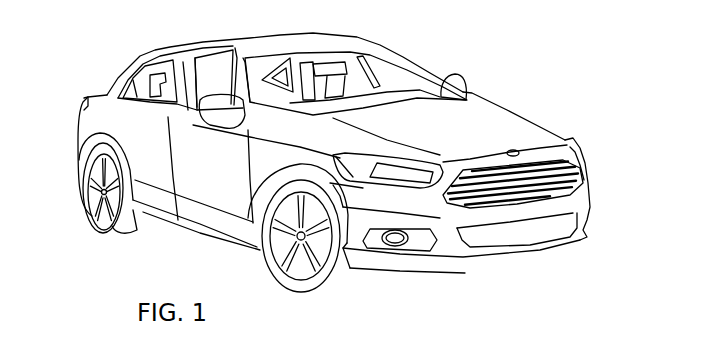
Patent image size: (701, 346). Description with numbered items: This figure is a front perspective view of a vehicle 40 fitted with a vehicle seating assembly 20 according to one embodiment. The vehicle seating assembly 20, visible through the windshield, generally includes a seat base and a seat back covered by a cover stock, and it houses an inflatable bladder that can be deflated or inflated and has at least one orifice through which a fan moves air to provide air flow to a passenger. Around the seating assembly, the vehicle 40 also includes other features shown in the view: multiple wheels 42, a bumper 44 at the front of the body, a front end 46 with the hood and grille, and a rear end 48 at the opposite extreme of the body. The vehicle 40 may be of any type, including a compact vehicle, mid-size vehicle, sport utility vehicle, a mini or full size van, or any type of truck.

The vehicle seating assembly 20 is at (330, 80).
The vehicle 40 is at (488, 106).
The wheels 42 is at (120, 231).
The bumper 44 is at (448, 246).
The front end 46 is at (520, 142).
The rear end 48 is at (88, 102).